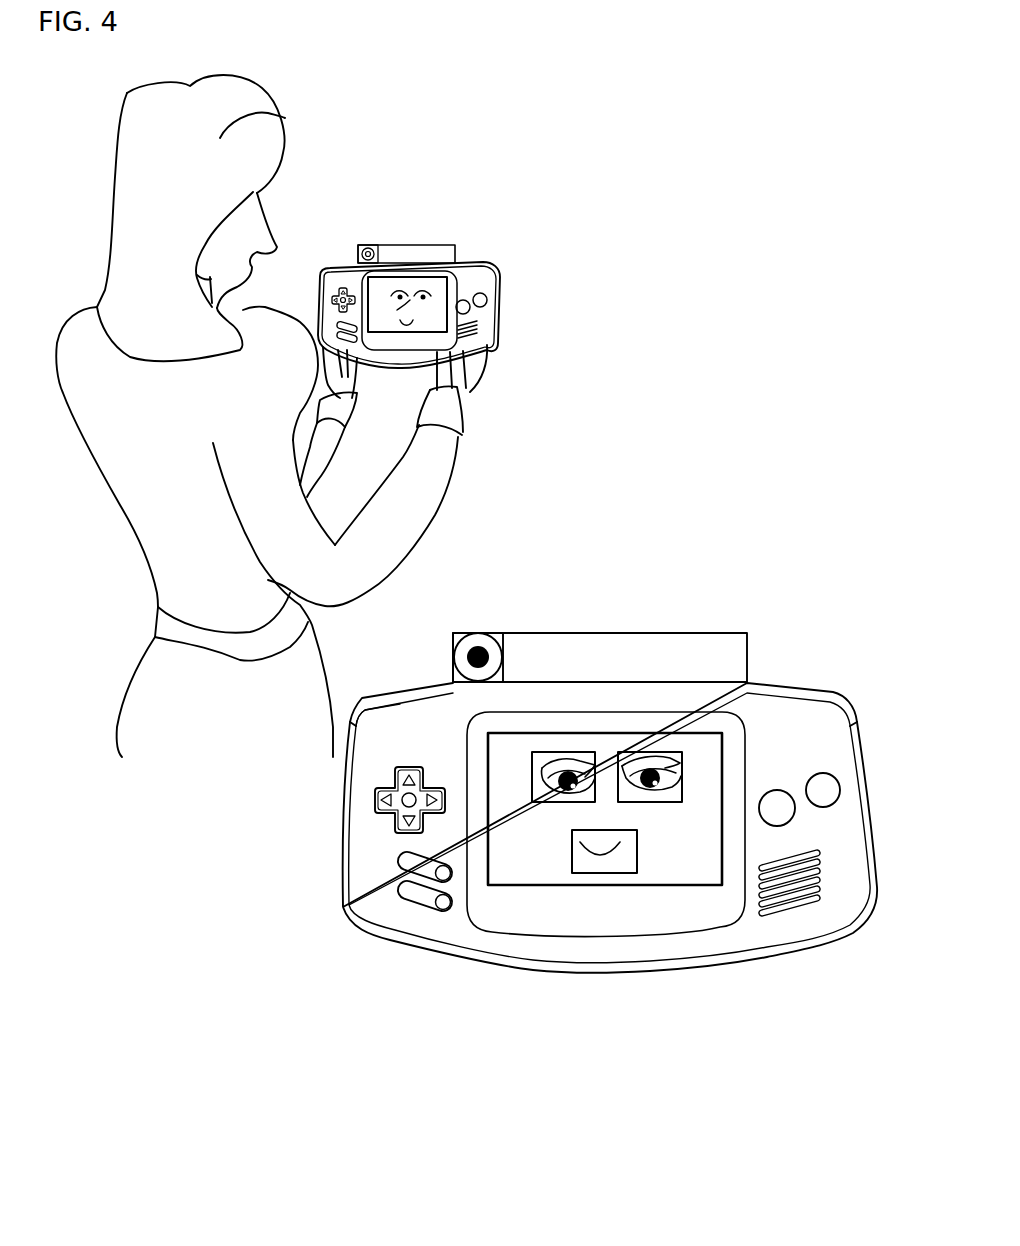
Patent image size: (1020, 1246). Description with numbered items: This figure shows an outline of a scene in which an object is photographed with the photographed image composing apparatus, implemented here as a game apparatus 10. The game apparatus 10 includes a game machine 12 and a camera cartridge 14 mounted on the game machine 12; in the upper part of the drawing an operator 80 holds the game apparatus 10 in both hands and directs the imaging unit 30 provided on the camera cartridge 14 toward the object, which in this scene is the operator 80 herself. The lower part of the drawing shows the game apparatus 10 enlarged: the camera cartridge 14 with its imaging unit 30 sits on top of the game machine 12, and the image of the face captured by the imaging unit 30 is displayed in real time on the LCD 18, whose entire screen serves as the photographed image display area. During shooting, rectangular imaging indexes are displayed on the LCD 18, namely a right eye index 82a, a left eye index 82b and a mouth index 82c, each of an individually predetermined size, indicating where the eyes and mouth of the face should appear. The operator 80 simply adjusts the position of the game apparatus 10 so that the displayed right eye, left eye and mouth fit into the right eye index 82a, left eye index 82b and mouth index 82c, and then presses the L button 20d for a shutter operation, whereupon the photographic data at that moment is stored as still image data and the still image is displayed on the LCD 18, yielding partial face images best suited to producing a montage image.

The game apparatus 10 is at (597, 616).
The game machine 12 is at (500, 285).
The camera cartridge 14 is at (423, 245).
The LCD 18 is at (528, 870).
The L button 20d is at (368, 700).
The imaging unit 30 is at (488, 654).
The operator 80 is at (283, 117).
The right eye index 82a is at (567, 760).
The left eye index 82b is at (685, 778).
The mouth index 82c is at (640, 855).